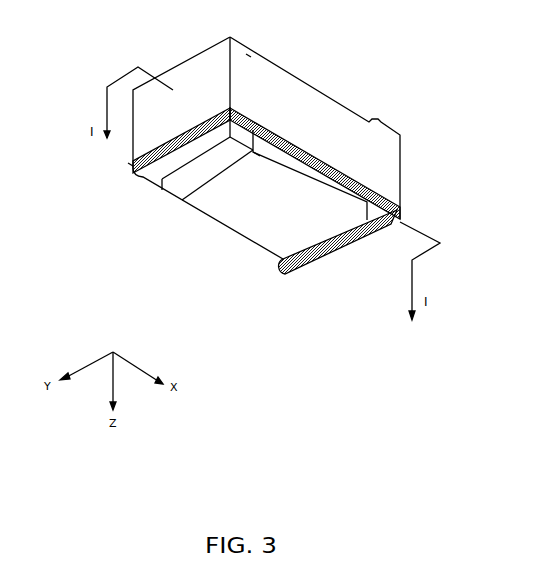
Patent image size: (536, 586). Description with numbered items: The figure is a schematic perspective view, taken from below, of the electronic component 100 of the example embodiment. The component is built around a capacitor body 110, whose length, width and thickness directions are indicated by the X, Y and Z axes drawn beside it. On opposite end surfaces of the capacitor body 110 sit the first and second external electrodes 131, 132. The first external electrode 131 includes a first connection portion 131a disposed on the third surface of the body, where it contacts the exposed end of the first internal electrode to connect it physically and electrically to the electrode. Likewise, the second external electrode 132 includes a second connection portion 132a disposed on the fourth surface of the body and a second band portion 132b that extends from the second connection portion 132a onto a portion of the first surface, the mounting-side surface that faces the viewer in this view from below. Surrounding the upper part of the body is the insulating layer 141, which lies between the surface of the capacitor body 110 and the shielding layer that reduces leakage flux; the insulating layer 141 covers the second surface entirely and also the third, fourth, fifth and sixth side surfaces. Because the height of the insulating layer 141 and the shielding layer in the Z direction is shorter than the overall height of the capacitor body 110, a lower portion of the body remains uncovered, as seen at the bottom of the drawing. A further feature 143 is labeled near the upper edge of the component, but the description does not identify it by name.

The electronic component 100 is at (177, 27).
The capacitor body 110 is at (236, 225).
The first external electrode 131 is at (206, 204).
The first connection portion 131a is at (142, 180).
The second external electrode 132 is at (315, 217).
The second connection portion 132a is at (229, 239).
The second band portion 132b is at (300, 309).
The insulating layer 141 is at (130, 164).
The groove 143 is at (246, 54).